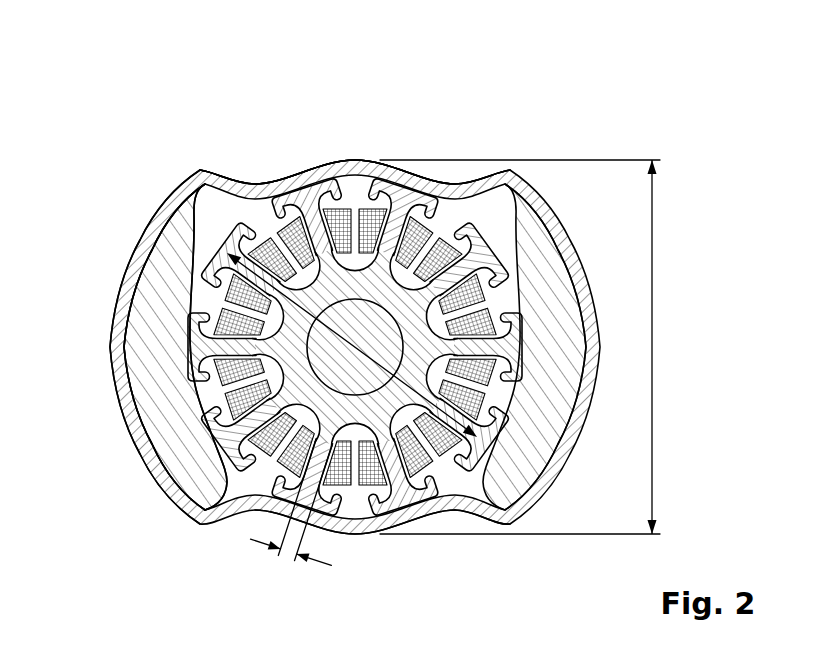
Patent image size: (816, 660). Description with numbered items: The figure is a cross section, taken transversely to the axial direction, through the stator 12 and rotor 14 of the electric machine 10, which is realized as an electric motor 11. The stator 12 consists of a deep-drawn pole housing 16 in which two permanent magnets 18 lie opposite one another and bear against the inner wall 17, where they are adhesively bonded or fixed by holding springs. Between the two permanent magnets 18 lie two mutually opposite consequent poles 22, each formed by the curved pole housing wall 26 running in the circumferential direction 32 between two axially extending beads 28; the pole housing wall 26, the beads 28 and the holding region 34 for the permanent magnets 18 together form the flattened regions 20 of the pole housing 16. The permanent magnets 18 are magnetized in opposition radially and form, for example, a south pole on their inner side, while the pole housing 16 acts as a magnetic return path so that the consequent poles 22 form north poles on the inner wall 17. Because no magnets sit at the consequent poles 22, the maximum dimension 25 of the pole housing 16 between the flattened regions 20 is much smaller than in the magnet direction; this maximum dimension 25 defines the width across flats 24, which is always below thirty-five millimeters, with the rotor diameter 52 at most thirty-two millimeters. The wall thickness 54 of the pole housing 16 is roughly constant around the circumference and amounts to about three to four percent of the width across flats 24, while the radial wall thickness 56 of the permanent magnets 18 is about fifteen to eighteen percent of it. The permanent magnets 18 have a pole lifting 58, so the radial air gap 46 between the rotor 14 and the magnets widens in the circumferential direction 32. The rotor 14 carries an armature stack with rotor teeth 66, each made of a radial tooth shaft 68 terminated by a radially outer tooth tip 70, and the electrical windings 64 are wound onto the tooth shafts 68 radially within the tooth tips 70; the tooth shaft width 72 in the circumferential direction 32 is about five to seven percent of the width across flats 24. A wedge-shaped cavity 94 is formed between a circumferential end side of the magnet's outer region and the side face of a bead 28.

The electric machine 10 is at (355, 279).
The electric motor 11 is at (226, 85).
The stator 12 is at (100, 393).
The rotor 14 is at (303, 386).
The pole housing 16 is at (122, 306).
The inner wall 17 is at (163, 440).
The permanent magnets 18 is at (158, 408).
The flattened regions 20 is at (525, 139).
The consequent poles 22 is at (355, 163).
The width across flats 24 is at (564, 347).
The maximum dimension 25 is at (655, 347).
The pole housing wall 26 is at (417, 177).
The beads 28 is at (248, 180).
The circumferential direction 32 is at (247, 120).
The holding region 34 is at (200, 170).
The radial air gap 46 is at (200, 346).
The rotor diameter 52 is at (470, 386).
The wall thickness 54 is at (170, 257).
The radial wall thickness 56 is at (517, 290).
The pole lifting 58 is at (227, 222).
The electrical windings 64 is at (490, 375).
The rotor teeth 66 is at (215, 373).
The tooth shafts 68 is at (257, 512).
The tooth tips 70 is at (407, 492).
The tooth shaft width 72 is at (286, 556).
The cavity 94 is at (477, 490).